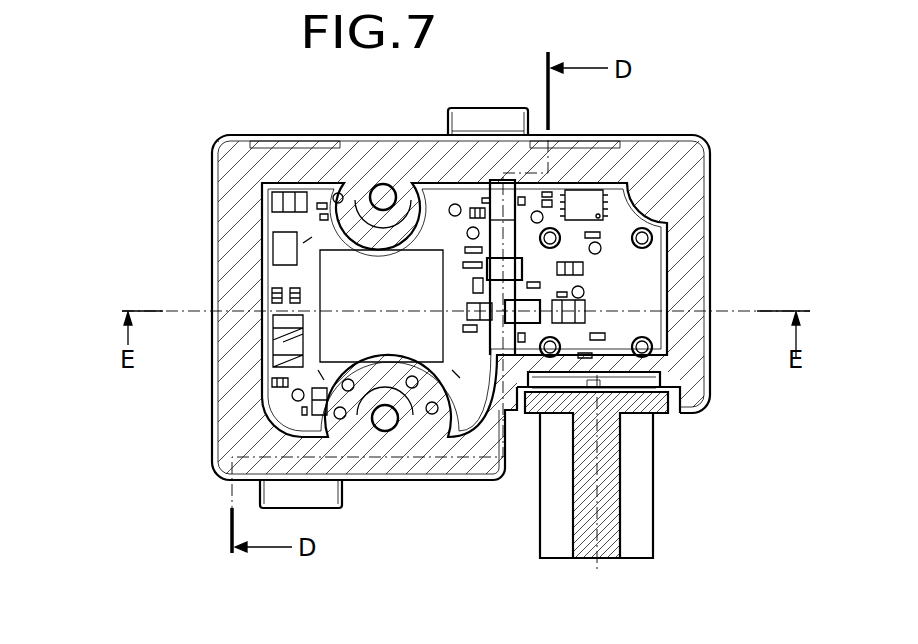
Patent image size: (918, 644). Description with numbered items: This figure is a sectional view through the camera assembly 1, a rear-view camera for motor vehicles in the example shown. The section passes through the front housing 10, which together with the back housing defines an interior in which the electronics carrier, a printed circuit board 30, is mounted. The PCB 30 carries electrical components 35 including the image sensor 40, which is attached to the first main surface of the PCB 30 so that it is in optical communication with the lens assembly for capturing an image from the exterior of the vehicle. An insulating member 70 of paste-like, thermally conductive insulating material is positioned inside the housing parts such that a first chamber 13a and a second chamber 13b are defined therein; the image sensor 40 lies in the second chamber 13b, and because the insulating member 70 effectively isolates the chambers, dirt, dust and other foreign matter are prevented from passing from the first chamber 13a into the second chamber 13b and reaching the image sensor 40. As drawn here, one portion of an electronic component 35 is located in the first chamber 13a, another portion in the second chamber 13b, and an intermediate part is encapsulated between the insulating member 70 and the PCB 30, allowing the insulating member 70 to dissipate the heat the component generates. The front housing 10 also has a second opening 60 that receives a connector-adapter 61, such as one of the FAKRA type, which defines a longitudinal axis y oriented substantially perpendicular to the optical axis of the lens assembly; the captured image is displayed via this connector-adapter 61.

The camera assembly 1 is at (184, 169).
The front housing 10 is at (703, 178).
The first chamber 13a is at (653, 255).
The second chamber 13b is at (318, 370).
The electronics carrier 30 is at (627, 297).
The electronic component 35 is at (512, 252).
The image sensor 40 is at (345, 273).
The second opening 60 is at (517, 405).
The connector-adapter 61 is at (610, 485).
The insulating member 70 is at (498, 195).
The longitudinal axis y is at (597, 568).